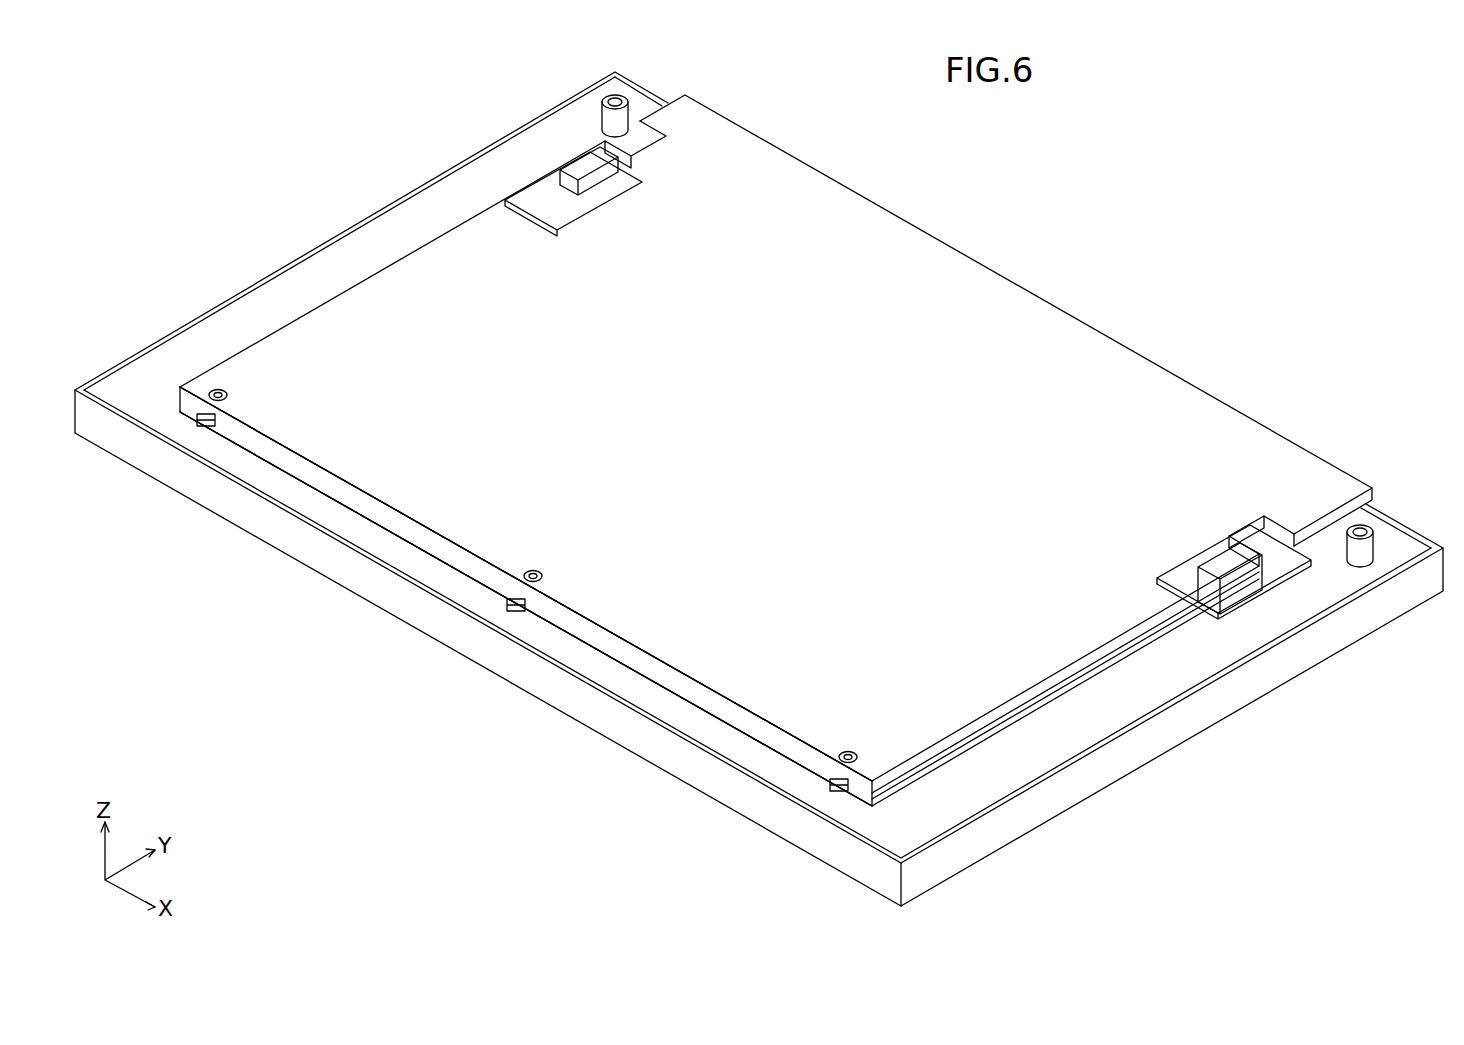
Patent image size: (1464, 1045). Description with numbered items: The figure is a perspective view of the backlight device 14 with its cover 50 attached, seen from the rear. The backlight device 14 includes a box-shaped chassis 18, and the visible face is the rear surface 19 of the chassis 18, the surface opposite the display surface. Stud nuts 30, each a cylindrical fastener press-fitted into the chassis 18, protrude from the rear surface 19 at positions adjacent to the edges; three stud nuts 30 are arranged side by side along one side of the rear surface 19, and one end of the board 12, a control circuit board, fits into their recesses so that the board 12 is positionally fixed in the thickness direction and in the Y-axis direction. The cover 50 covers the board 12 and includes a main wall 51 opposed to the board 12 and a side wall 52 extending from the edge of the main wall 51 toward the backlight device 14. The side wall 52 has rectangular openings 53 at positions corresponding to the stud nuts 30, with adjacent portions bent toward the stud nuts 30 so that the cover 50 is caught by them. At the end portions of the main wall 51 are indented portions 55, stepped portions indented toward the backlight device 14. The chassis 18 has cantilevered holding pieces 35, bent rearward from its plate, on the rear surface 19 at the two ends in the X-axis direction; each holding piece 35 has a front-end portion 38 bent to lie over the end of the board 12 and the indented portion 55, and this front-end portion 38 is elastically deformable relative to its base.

The board 12 is at (1040, 700).
The backlight device 14 is at (267, 240).
The chassis 18 is at (417, 213).
The rear surface 19 is at (1145, 680).
The stud nut 30 is at (625, 120).
The holding piece 35 is at (530, 205).
The front-end portion 38 is at (620, 190).
The cover 50 is at (267, 617).
The main wall 51 is at (290, 420).
The side wall 52 is at (303, 468).
The opening 53 is at (838, 790).
The indented portion 55 is at (553, 205).